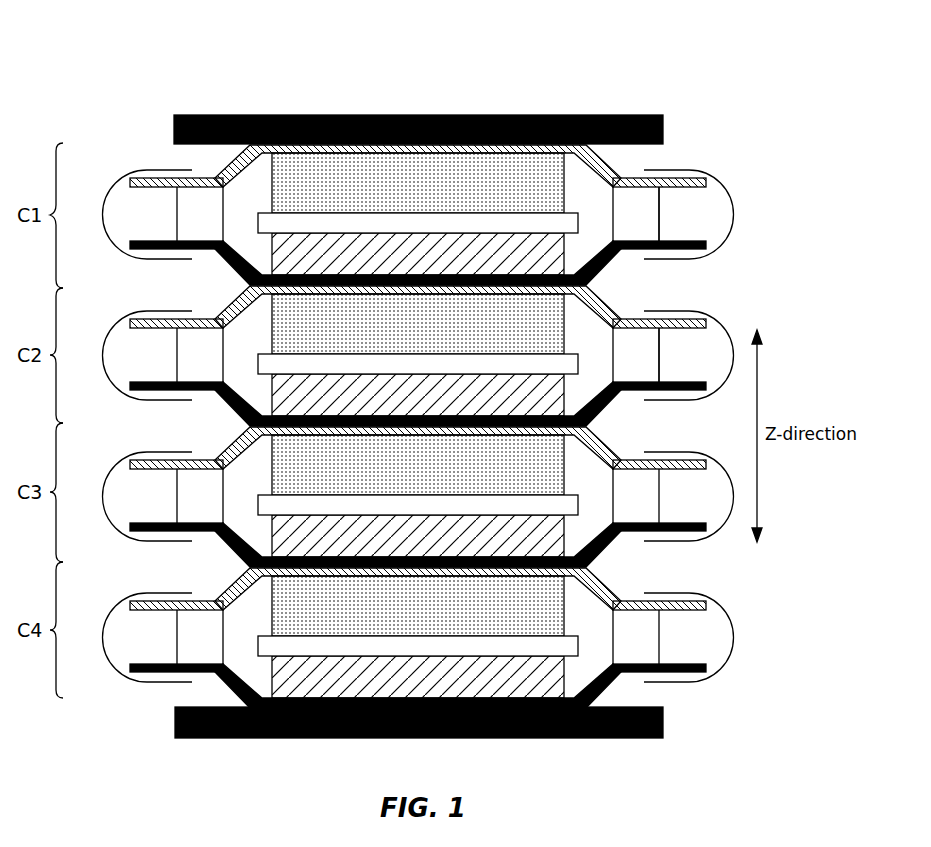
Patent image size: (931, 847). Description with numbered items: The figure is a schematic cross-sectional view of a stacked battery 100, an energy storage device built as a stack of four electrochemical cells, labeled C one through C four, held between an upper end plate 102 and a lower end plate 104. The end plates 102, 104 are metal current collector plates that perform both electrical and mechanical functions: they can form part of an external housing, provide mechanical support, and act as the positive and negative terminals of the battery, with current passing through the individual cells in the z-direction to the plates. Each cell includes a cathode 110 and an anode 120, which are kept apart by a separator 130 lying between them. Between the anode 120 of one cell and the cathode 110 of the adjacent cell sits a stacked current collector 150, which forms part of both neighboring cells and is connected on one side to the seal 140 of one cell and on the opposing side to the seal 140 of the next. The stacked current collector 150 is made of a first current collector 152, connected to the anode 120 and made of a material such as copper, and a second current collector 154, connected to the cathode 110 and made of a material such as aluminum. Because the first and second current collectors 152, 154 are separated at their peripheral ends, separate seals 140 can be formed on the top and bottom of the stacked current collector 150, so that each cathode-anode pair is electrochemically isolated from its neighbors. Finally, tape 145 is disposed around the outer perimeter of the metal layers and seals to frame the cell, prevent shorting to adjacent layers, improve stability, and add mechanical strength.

The stacked battery 100 is at (272, 58).
The end plate 102 is at (540, 115).
The end plate 104 is at (287, 739).
The cathode 110 is at (268, 172).
The anode 120 is at (270, 237).
The separator 130 is at (258, 648).
The seal 140 is at (662, 222).
The tape 145 is at (698, 170).
The stacked current collector 150 is at (787, 187).
The first current collector 152 is at (732, 213).
The second current collector 154 is at (710, 320).